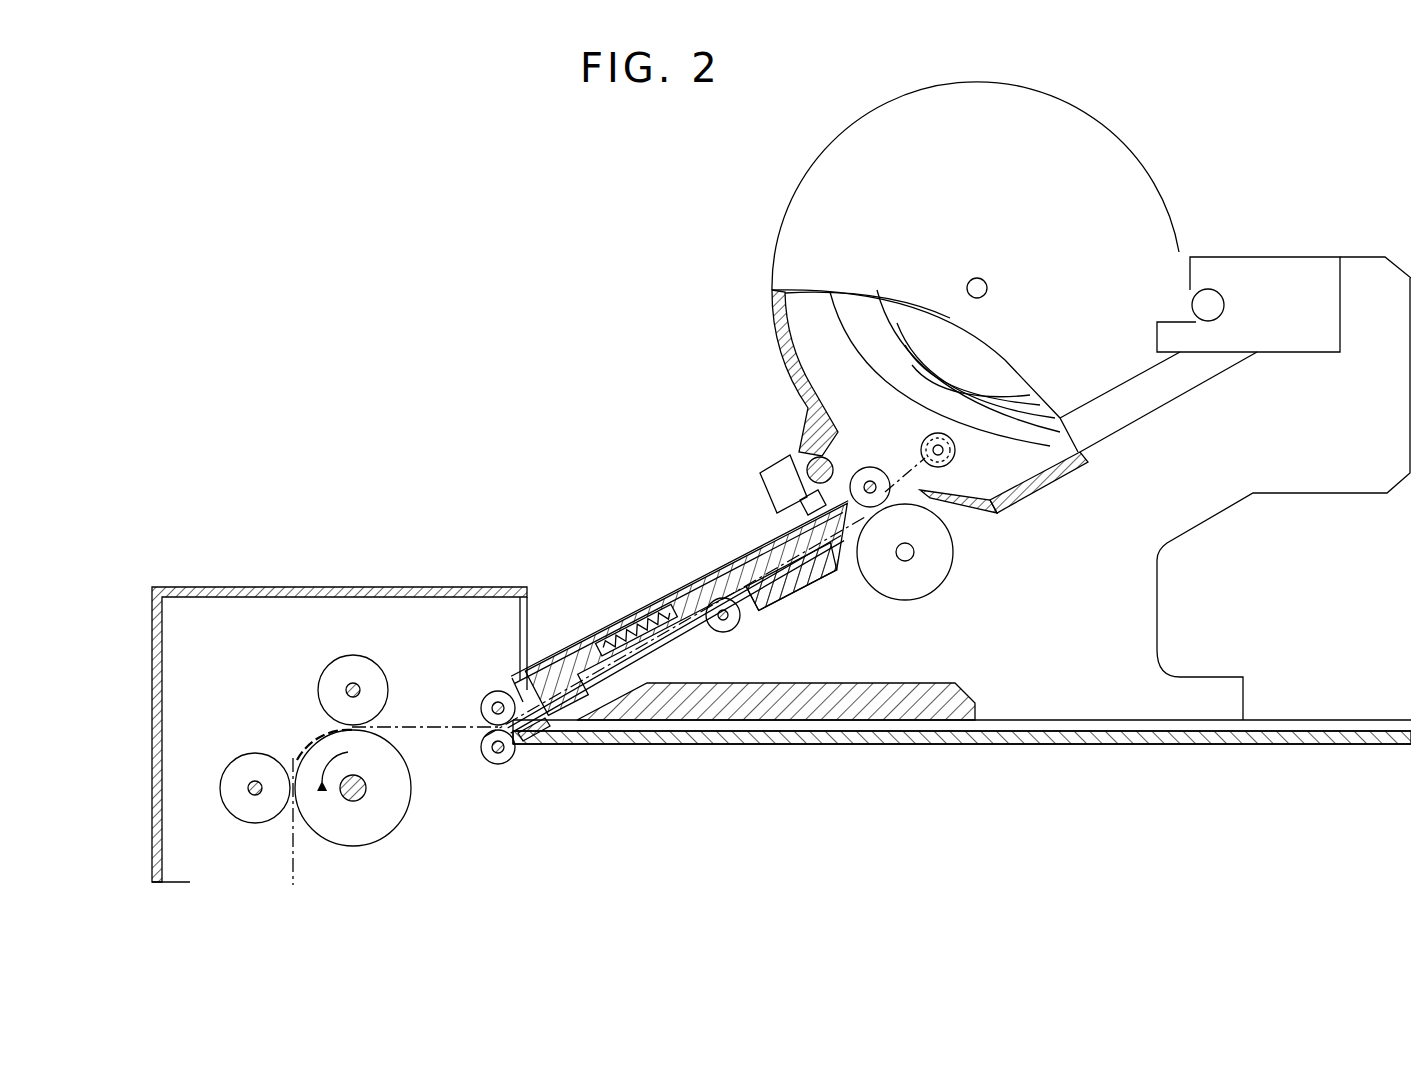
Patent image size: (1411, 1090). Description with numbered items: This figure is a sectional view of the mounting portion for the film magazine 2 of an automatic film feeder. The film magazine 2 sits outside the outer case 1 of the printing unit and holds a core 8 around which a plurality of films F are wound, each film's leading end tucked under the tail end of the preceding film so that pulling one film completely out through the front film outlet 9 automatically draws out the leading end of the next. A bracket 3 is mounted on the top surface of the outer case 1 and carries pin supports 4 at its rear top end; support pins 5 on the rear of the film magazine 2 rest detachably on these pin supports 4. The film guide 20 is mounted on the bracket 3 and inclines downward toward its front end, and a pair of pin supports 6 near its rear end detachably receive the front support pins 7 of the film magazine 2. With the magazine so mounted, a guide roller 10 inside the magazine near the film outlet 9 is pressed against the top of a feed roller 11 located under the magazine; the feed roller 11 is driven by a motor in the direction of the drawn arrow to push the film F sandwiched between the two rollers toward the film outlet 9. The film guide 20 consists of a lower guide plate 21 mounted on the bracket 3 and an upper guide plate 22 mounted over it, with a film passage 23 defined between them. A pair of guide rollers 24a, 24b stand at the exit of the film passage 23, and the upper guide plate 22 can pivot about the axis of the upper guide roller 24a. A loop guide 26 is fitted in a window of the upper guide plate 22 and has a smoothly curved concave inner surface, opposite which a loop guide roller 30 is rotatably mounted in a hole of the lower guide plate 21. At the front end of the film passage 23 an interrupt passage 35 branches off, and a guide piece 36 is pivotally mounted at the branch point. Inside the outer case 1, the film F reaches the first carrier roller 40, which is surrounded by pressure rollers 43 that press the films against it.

The outer case 1 is at (310, 588).
The film magazine 2 is at (1036, 100).
The bracket 3 is at (1230, 500).
The pin supports 4 is at (1262, 268).
The support pins 5 is at (1208, 290).
The pin supports 6 is at (772, 472).
The front support pins 7 is at (808, 458).
The core 8 is at (922, 322).
The film outlet 9 is at (800, 510).
The guide roller 10 is at (868, 466).
The feed roller 11 is at (925, 586).
The film guide 20 is at (553, 633).
The lower guide plate 21 is at (818, 578).
The upper guide plate 22 is at (512, 678).
The film passage 23 is at (600, 640).
The upper guide roller 24a is at (488, 696).
The lower guide roller 24b is at (490, 762).
The loop guide 26 is at (697, 588).
The loop guide roller 30 is at (740, 622).
The interrupt passage 35 is at (722, 745).
The guide piece 36 is at (538, 738).
The first carrier roller 40 is at (355, 845).
The pressure rollers 43 is at (265, 767).
The films F is at (850, 320).